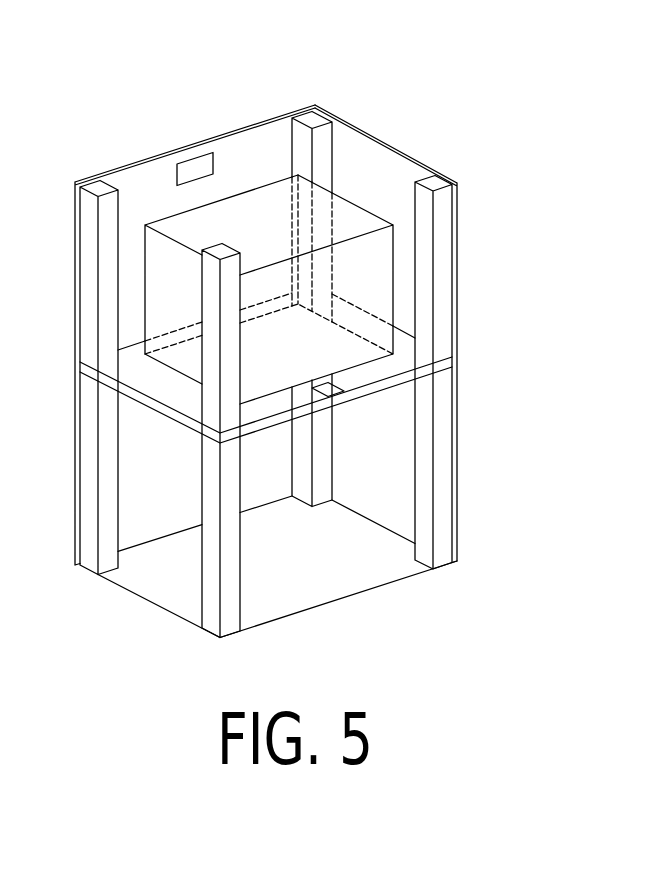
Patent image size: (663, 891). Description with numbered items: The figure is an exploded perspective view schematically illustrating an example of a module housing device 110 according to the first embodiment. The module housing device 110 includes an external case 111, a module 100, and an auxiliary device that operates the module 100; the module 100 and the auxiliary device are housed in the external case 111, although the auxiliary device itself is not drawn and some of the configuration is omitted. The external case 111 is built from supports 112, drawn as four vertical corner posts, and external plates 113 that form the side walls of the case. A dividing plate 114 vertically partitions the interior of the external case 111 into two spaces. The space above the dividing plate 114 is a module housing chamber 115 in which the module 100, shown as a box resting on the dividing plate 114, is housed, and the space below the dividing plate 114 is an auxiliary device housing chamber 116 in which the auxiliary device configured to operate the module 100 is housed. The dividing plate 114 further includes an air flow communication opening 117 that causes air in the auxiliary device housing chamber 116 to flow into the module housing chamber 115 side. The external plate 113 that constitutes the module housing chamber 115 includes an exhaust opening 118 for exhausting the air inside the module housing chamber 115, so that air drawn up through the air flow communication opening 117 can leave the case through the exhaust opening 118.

The module housing device 110 is at (79, 85).
The external case 111 is at (390, 43).
The supports 112 is at (311, 108).
The external plates 113 is at (341, 125).
The dividing plate 114 is at (456, 366).
The module housing chamber 115 is at (370, 179).
The auxiliary device housing chamber 116 is at (394, 473).
The air flow communication opening 117 is at (333, 370).
The exhaust opening 118 is at (190, 163).
The module 100 is at (397, 272).